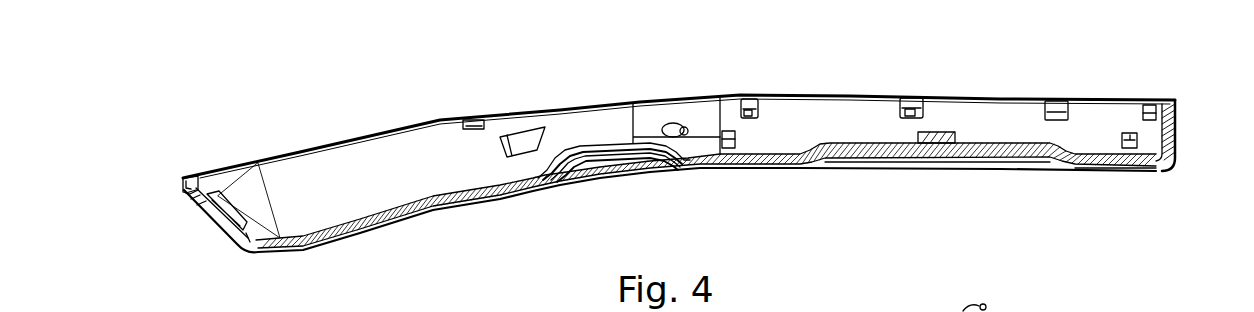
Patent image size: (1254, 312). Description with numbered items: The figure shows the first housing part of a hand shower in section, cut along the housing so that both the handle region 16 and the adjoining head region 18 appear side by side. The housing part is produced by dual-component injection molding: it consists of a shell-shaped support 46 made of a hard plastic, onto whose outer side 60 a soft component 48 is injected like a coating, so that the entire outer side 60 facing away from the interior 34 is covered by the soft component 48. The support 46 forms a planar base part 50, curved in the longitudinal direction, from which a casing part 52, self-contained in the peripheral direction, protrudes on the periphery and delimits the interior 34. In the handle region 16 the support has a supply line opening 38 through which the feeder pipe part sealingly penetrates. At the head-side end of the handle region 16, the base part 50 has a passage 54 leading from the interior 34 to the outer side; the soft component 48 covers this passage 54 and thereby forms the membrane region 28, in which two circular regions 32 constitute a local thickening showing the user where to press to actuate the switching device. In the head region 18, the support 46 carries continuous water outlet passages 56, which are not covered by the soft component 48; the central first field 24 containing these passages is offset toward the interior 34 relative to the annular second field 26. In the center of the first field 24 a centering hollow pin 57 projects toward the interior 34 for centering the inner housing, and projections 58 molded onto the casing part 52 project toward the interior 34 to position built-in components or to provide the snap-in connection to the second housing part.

The handle region 16 is at (440, 109).
The head region 18 is at (1129, 89).
The central first field 24 is at (883, 160).
The annular second field 26 is at (782, 168).
The membrane region 28 is at (615, 180).
The circular regions 32 is at (567, 187).
The interior 34 is at (402, 184).
The supply line opening 38 is at (247, 233).
The support 46 is at (331, 160).
The soft component 48 is at (505, 197).
The base part 50 is at (432, 213).
The casing part 52 is at (1178, 130).
The passage 54 is at (597, 145).
The water outlet passages 56 is at (1107, 172).
The centering hollow pin 57 is at (947, 130).
The projections 58 is at (923, 97).
The outer side 60 is at (337, 237).